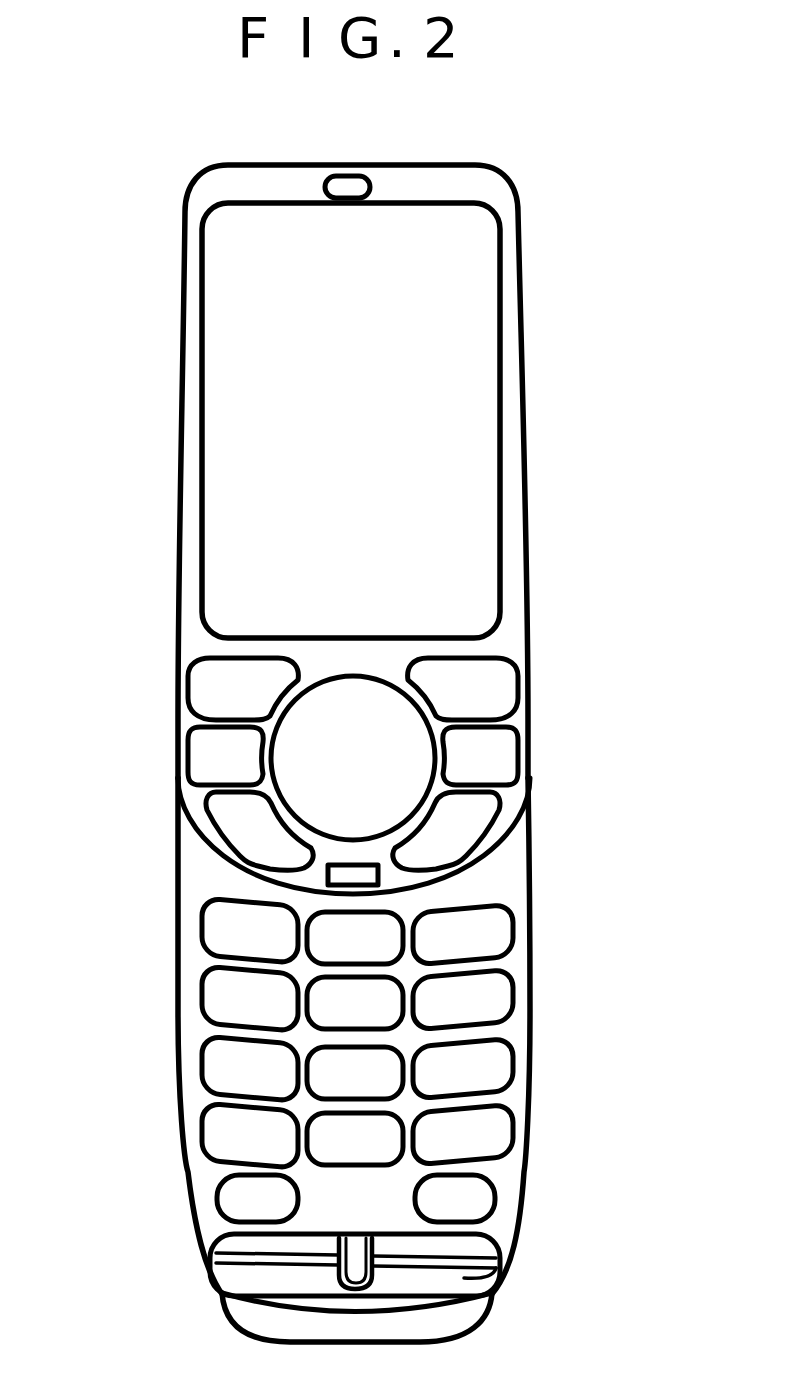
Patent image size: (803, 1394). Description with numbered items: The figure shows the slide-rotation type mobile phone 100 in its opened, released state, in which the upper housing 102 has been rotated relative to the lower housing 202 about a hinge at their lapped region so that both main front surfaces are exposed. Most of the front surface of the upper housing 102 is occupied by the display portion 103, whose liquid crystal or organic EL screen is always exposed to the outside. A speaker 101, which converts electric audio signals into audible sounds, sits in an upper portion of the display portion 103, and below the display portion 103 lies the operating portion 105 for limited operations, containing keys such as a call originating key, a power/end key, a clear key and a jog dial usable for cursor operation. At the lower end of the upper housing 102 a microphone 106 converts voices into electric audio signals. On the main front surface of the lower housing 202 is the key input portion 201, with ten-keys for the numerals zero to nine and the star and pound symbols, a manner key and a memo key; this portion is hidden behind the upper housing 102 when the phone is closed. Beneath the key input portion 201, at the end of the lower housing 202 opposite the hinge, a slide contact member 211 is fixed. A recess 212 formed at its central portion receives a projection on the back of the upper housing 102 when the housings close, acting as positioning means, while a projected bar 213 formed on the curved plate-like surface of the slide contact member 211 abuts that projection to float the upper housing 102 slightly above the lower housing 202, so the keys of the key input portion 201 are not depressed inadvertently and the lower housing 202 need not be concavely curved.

The mobile phone 100 is at (527, 193).
The speaker 101 is at (338, 187).
The upper housing 102 is at (184, 322).
The display portion 103 is at (250, 466).
The operating portion 105 is at (553, 638).
The microphone 106 is at (378, 876).
The key input portion 201 is at (157, 902).
The lower housing 202 is at (532, 1023).
The slide contact member 211 is at (213, 1277).
The recess 212 is at (357, 1253).
The projected bar 213 is at (465, 1259).